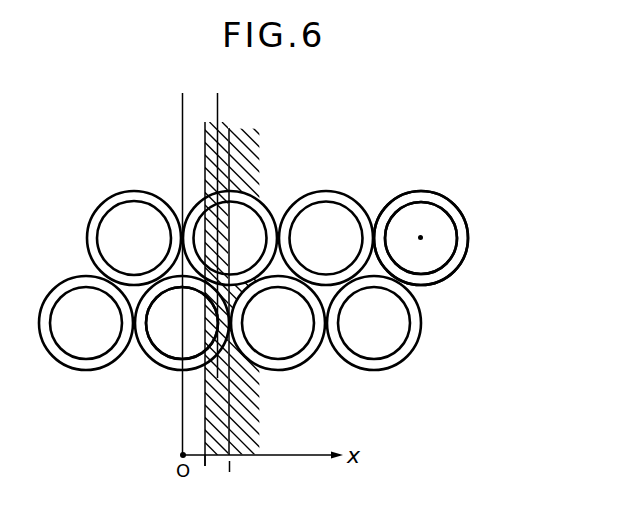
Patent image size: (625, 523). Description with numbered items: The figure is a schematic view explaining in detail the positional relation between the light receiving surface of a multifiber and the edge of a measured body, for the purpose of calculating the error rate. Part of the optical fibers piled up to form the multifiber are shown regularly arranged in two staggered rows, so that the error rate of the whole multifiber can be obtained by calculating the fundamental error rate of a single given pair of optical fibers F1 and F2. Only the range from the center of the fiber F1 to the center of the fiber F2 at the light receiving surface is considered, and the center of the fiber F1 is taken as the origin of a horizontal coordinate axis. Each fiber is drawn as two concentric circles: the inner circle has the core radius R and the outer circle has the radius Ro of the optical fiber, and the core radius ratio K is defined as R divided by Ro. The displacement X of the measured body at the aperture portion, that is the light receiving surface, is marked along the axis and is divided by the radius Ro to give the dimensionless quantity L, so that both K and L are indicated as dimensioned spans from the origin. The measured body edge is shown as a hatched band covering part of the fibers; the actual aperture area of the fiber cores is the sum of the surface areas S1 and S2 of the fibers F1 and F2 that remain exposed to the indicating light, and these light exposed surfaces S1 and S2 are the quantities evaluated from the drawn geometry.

The optical fiber F1 is at (148, 360).
The optical fiber F2 is at (270, 208).
The light exposed surface S1 is at (190, 340).
The light exposed surface S2 is at (172, 200).
The core radius R is at (420, 238).
The radius of optical fiber Ro is at (420, 238).
The core radius ratio K is at (218, 103).
The dimensionless displacement L is at (222, 434).
The displacement of measured body X is at (210, 478).